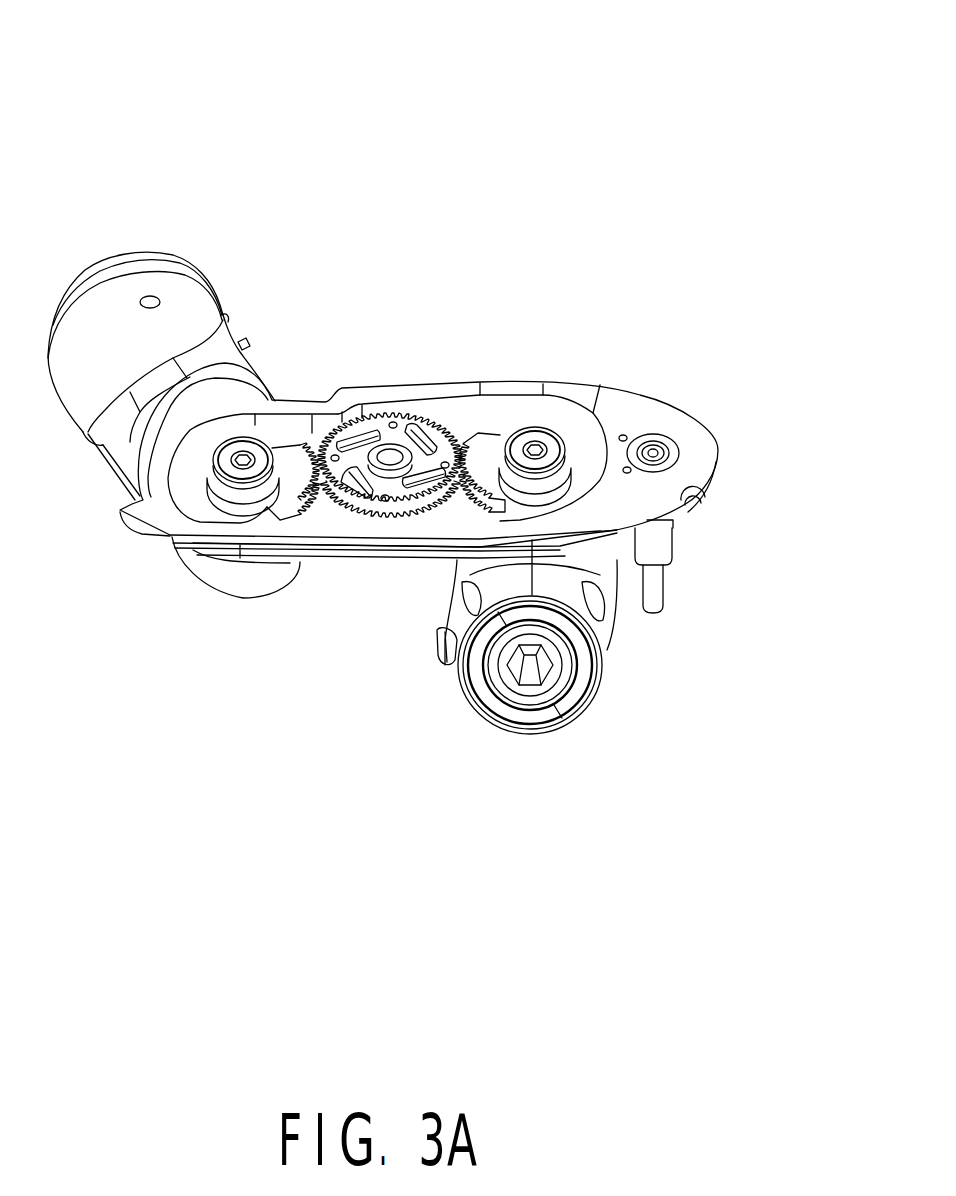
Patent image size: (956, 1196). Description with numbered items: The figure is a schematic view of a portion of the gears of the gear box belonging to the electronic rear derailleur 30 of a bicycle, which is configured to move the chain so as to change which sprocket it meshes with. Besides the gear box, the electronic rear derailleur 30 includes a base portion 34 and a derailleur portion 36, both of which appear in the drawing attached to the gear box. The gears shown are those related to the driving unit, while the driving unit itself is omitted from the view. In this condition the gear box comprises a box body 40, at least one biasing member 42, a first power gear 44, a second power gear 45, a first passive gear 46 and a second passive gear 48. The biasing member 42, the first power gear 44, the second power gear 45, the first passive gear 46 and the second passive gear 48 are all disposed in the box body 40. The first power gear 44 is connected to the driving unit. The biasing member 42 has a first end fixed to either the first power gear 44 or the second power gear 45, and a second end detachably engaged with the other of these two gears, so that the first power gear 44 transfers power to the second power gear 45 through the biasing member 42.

The electronic rear derailleur 30 is at (565, 180).
The base portion 34 is at (608, 640).
The derailleur portion 36 is at (237, 580).
The box body 40 is at (618, 405).
The biasing member 42 is at (352, 437).
The first power gear 44 is at (440, 437).
The second power gear 45 is at (330, 525).
The first passive gear 46 is at (483, 450).
The second passive gear 48 is at (297, 475).